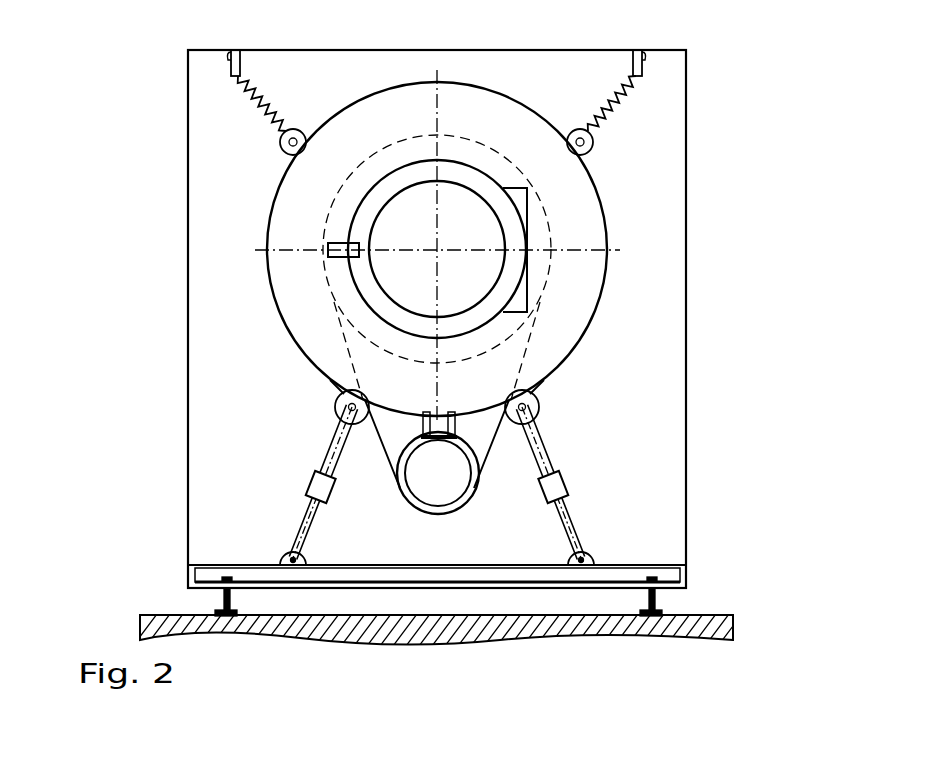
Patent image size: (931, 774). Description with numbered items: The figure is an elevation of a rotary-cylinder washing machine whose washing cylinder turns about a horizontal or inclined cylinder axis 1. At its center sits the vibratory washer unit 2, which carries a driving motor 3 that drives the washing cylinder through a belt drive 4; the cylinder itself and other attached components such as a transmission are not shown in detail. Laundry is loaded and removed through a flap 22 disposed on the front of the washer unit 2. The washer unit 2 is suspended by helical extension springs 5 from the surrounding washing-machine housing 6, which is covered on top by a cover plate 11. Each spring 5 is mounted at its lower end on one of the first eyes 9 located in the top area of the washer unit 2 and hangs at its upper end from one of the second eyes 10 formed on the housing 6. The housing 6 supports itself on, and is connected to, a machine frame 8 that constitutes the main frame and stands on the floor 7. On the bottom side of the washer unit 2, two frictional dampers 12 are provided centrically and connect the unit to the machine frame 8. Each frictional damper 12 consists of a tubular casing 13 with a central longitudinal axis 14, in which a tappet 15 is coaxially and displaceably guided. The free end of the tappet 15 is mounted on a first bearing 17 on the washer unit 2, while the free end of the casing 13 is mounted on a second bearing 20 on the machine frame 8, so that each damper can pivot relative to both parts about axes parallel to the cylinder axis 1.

The cylinder axis 1 is at (437, 250).
The vibratory washer unit 2 is at (614, 202).
The driving motor 3 is at (446, 488).
The belt drive 4 is at (532, 345).
The helical extension springs 5 is at (262, 105).
The washing-machine housing 6 is at (188, 360).
The floor 7 is at (170, 615).
The machine frame 8 is at (196, 585).
The first eyes 9 is at (280, 148).
The second eyes 10 is at (232, 63).
The cover plate 11 is at (262, 50).
The frictional dampers 12 is at (442, 482).
The tubular casing 13 is at (308, 508).
The central longitudinal axis 14 is at (330, 380).
The tappet 15 is at (336, 440).
The first bearing 17 is at (336, 400).
The second bearing 20 is at (290, 560).
The flap 22 is at (360, 218).